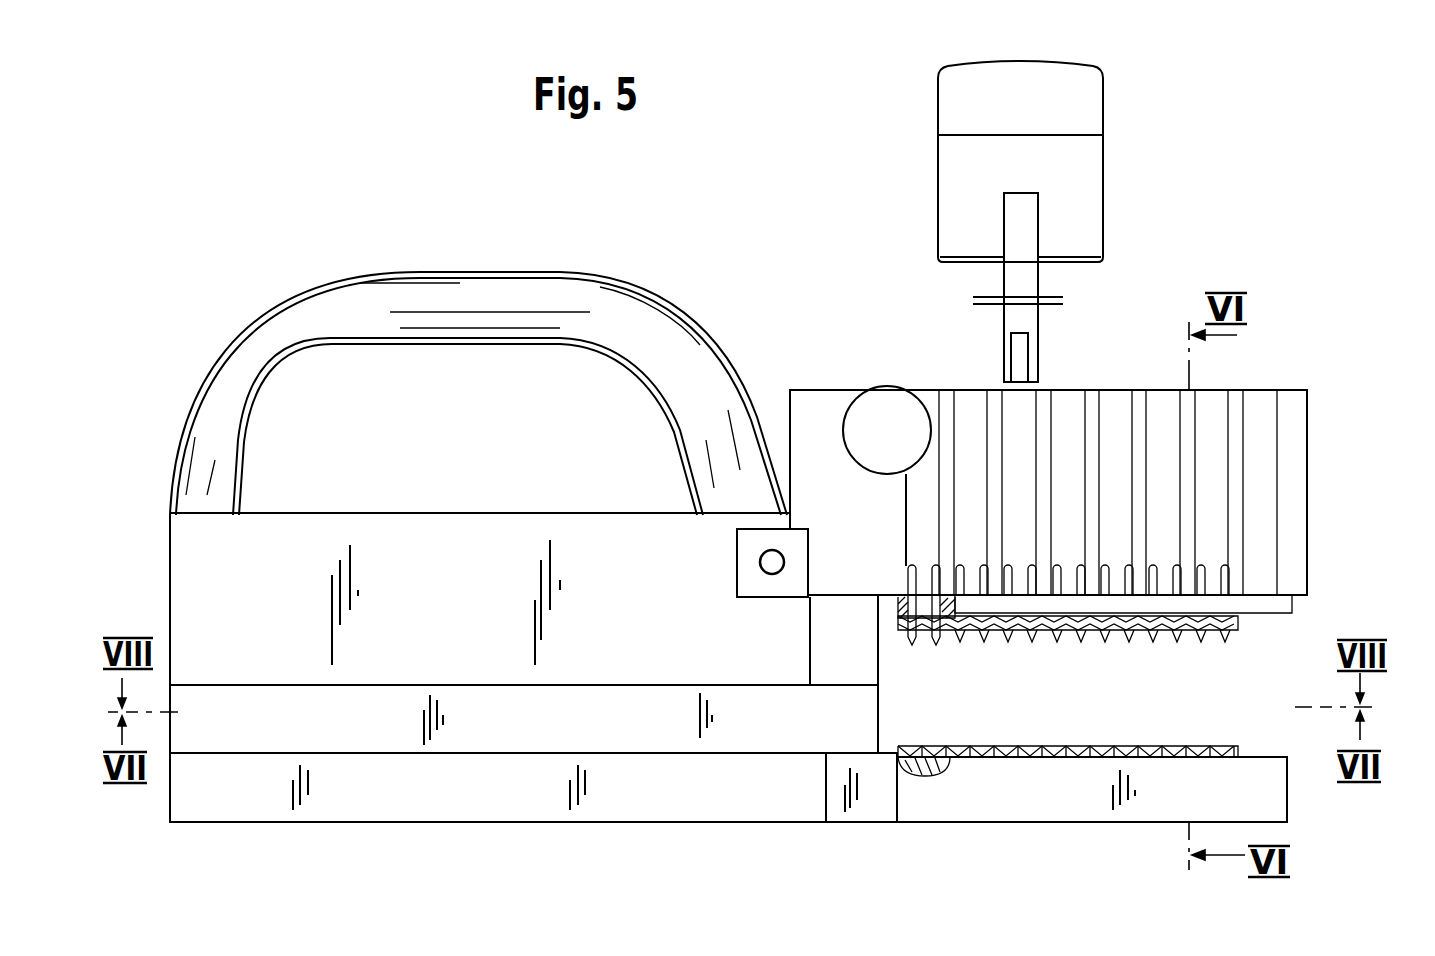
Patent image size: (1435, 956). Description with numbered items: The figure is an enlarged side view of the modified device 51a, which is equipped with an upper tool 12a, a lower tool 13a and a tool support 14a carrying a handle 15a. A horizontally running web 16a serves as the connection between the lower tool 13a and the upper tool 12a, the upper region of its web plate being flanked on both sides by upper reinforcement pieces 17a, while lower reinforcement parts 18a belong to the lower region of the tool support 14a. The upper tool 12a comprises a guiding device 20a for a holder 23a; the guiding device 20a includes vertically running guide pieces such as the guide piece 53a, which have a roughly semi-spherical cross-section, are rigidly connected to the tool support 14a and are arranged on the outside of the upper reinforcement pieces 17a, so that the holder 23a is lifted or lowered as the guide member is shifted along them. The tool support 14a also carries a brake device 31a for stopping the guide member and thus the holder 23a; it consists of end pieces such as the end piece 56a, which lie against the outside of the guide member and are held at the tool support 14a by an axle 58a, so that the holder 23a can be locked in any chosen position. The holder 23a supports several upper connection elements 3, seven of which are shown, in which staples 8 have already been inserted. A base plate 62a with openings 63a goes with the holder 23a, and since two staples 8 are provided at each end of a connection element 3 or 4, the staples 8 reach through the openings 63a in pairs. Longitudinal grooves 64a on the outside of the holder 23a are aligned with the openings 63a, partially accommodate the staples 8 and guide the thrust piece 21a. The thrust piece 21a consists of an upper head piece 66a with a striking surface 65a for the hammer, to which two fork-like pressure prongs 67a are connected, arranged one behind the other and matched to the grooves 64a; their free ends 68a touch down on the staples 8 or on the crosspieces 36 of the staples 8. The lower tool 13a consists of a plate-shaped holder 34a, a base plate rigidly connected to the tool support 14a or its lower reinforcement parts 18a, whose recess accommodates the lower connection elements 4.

The device 51a is at (272, 234).
The handle 15a is at (470, 272).
The tool support 14a is at (398, 511).
The upper reinforcement piece 17a is at (514, 525).
The web 16a is at (485, 703).
The lower reinforcement part 18a is at (473, 812).
The lower tool 13a is at (1290, 797).
The plate-shaped holder 34a is at (1024, 806).
The end piece 56a is at (742, 544).
The axle 58a is at (760, 568).
The brake device 31a is at (768, 600).
The guiding device 20a is at (826, 388).
The guide piece 53a is at (862, 652).
The upper tool 12a is at (1258, 387).
The holder 23a is at (1296, 468).
The longitudinal groove 64a is at (1003, 428).
The crosspiece 36 is at (1026, 566).
The staple 8 is at (1226, 566).
The opening 63a is at (922, 603).
The base plate 62a is at (1294, 603).
The upper connection element 3 is at (1216, 645).
The lower connection element 4 is at (1066, 745).
The thrust piece 21a is at (1108, 150).
The striking surface 65a is at (1085, 62).
The head piece 66a is at (943, 122).
The pressure prong 67a is at (1005, 325).
The free end 68a is at (1030, 372).